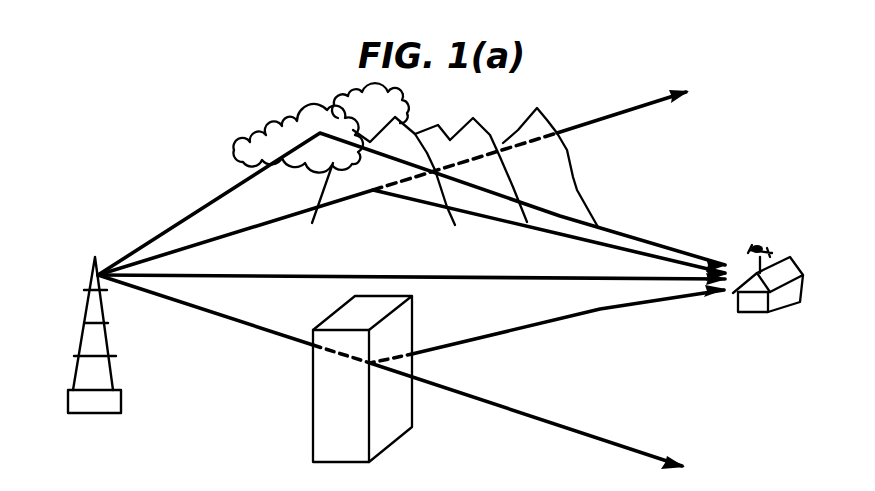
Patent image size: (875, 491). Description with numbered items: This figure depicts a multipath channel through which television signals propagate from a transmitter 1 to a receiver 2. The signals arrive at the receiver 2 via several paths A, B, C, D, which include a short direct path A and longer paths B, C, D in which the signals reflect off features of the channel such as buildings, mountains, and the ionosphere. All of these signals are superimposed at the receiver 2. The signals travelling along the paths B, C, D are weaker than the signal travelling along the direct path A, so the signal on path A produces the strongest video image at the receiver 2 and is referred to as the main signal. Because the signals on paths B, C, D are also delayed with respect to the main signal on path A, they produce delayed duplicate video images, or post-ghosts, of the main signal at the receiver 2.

The transmitter 1 is at (96, 274).
The receiver 2 is at (800, 268).
The direct path A is at (643, 278).
The reflected path B is at (623, 309).
The reflected path C is at (560, 238).
The reflected path D is at (664, 244).